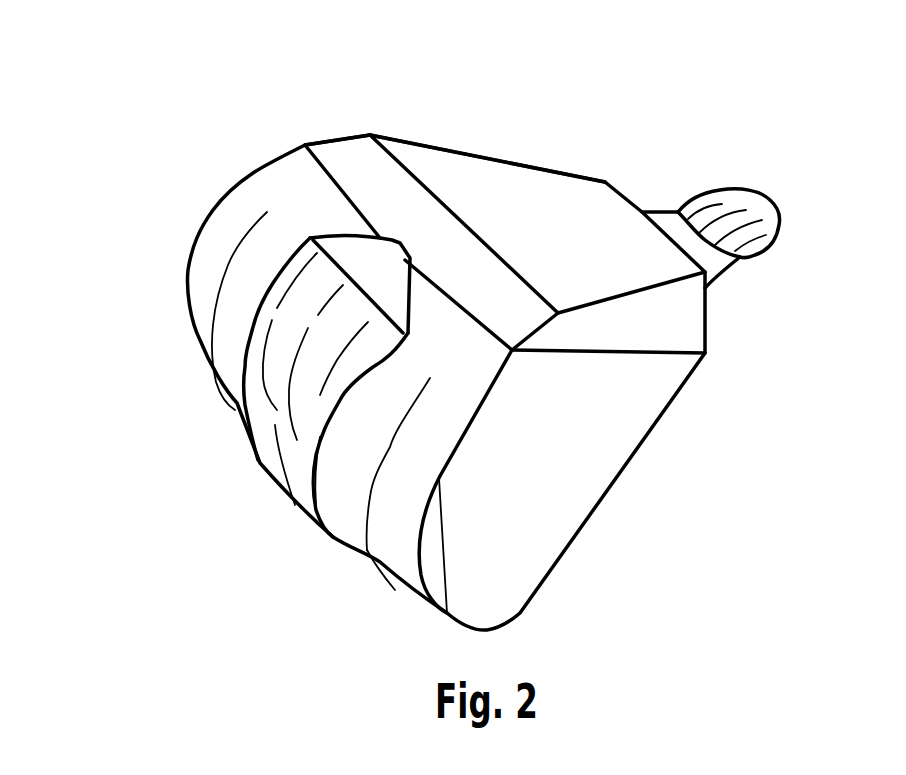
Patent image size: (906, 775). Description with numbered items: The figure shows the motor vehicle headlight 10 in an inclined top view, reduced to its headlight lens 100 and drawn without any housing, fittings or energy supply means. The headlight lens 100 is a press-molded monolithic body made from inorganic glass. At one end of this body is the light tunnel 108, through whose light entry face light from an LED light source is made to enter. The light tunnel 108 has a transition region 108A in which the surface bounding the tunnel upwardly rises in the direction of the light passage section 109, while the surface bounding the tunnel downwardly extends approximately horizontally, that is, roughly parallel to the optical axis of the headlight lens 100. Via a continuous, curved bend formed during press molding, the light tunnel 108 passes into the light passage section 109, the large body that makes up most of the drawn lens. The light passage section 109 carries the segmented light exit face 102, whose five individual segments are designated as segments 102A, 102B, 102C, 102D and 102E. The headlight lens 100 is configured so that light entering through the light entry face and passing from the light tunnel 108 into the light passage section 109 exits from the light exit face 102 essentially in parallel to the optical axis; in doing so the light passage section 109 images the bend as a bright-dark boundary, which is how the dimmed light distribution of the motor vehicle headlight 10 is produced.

The motor vehicle headlight 10 is at (493, 382).
The headlight lens 100 is at (695, 408).
The segmented light exit face 102 is at (235, 402).
The segment of light exit face 102A is at (283, 453).
The segment of light exit face 102B is at (208, 252).
The segment of light exit face 102C is at (237, 307).
The segment of light exit face 102D is at (343, 520).
The segment of light exit face 102E is at (397, 543).
The light tunnel 108 is at (728, 190).
The transition region 108A is at (665, 220).
The light passage section 109 is at (462, 165).